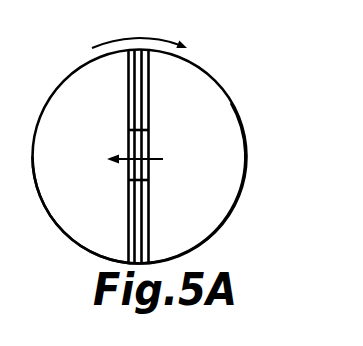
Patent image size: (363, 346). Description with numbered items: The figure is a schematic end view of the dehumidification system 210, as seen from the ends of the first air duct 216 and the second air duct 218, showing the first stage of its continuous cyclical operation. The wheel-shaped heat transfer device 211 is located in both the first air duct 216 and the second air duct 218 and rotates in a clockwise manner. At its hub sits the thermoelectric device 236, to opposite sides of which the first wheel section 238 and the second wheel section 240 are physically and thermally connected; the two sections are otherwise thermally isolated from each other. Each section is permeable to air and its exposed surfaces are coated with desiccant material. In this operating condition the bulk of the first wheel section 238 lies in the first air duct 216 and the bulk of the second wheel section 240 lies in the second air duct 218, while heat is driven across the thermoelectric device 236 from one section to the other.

The dehumidification system 210 is at (165, 155).
The wheel-shaped heat transfer device 211 is at (234, 99).
The first air duct 216 is at (173, 71).
The second air duct 218 is at (140, 71).
The thermoelectric device 236 is at (146, 140).
The first wheel section 238 is at (210, 246).
The second wheel section 240 is at (90, 260).